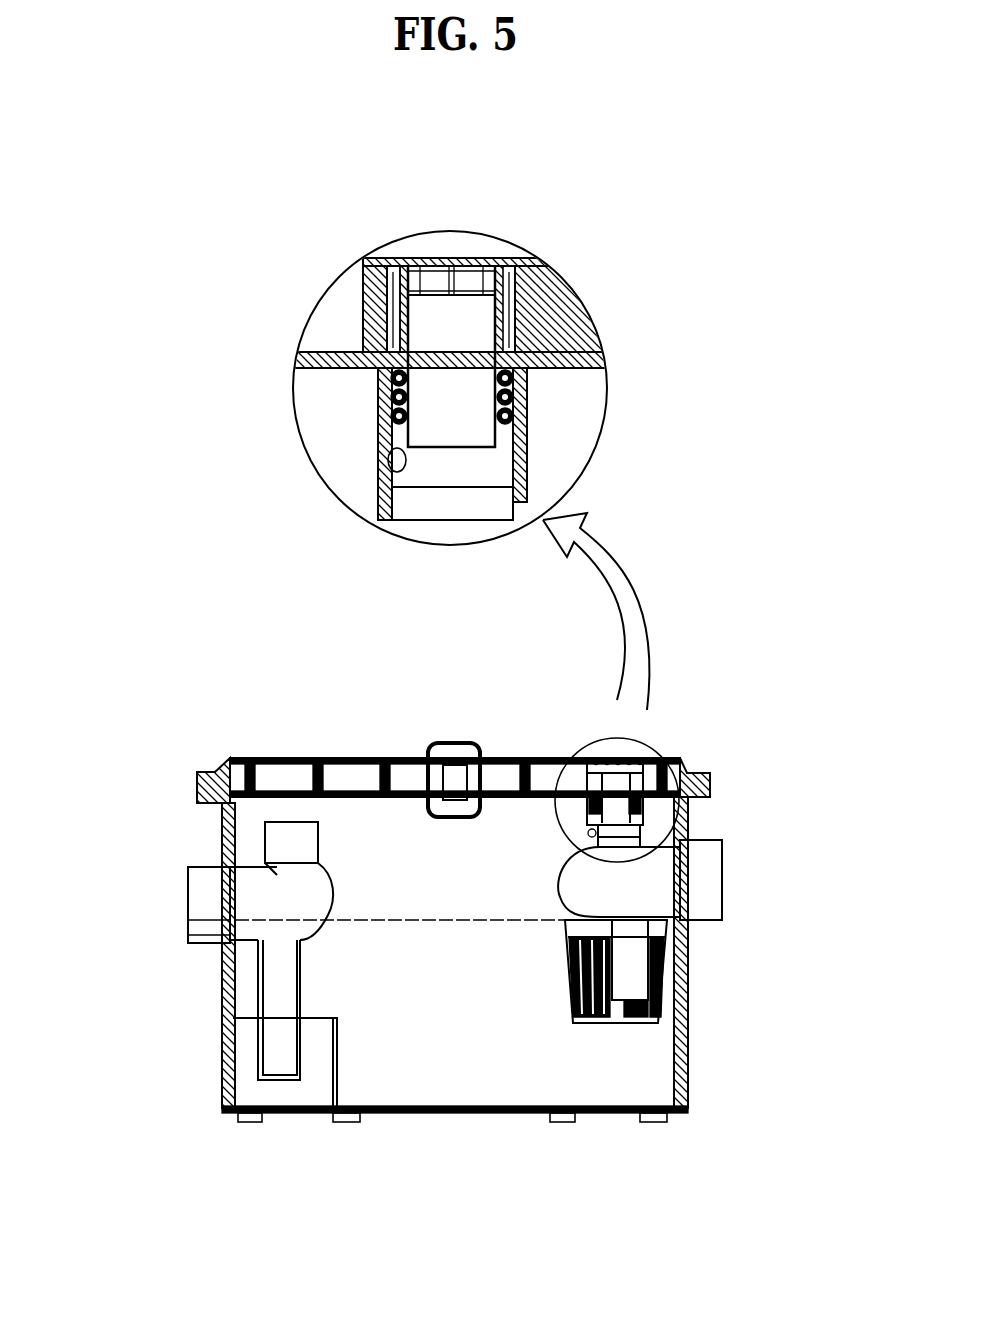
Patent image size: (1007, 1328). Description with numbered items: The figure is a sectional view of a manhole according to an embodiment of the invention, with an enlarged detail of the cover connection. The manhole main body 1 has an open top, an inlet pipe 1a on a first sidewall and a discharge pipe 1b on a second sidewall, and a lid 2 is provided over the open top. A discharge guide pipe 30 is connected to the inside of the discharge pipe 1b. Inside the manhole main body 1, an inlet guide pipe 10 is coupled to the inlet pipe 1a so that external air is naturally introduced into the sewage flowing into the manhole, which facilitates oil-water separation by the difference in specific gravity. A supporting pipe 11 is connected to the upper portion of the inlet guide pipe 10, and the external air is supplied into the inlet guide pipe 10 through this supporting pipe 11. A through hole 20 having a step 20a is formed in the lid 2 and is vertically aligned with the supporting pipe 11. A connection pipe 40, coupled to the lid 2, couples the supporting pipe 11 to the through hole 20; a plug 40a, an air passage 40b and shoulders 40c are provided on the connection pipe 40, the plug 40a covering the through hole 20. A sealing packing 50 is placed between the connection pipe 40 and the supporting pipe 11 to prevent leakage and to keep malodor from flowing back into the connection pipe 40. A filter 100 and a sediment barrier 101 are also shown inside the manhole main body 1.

The manhole main body 1 is at (223, 1057).
The inlet pipe 1a is at (708, 912).
The discharge pipe 1b is at (187, 934).
The lid 2 is at (363, 258).
The inlet guide pipe 10 is at (535, 484).
The supporting pipe 11 is at (387, 483).
The through hole 20 is at (573, 324).
The step 20a is at (533, 260).
The discharge guide pipe 30 is at (250, 861).
The connection pipe 40 is at (428, 258).
The plug 40a is at (463, 262).
The air passage 40b is at (380, 377).
The shoulders 40c is at (363, 322).
The sealing packing 50 is at (527, 394).
The filter 100 is at (686, 958).
The sediment barrier 101 is at (337, 1050).